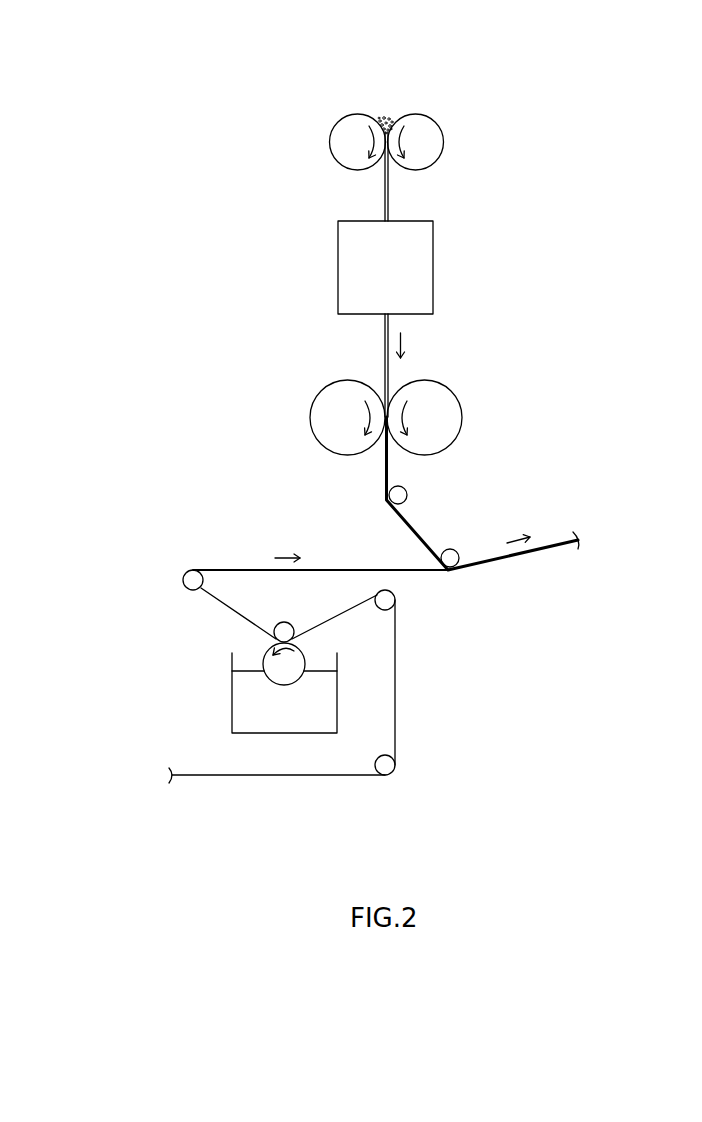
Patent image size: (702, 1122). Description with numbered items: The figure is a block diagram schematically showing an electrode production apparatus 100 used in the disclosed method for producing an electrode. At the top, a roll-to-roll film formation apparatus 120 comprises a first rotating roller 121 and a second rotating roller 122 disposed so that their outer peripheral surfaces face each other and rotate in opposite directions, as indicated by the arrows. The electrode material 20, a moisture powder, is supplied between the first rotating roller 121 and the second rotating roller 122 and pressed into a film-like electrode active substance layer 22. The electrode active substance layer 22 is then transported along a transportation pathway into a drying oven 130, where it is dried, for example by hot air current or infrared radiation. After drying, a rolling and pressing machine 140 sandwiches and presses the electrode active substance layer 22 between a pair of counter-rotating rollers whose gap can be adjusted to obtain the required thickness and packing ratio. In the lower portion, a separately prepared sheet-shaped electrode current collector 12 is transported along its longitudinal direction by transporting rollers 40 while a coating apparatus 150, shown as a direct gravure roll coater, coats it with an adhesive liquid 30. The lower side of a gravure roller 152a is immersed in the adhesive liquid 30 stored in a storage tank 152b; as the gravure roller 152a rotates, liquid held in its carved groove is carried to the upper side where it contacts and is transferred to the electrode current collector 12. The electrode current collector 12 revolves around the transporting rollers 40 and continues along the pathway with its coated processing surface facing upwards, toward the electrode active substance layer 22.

The electrode production apparatus 100 is at (75, 33).
The roll-to-roll film formation apparatus 120 is at (340, 100).
The first rotating roller 121 is at (330, 143).
The second rotating roller 122 is at (440, 143).
The electrode material 20 is at (388, 118).
The electrode active substance layer 22 is at (390, 198).
The drying oven 130 is at (432, 278).
The rolling and pressing machine 140 is at (312, 418).
The transporting rollers 40 is at (406, 492).
The coating apparatus 150 is at (157, 655).
The gravure roller 152a is at (265, 657).
The storage tank 152b is at (232, 687).
The adhesive liquid 30 is at (320, 702).
The electrode current collector 12 is at (230, 777).